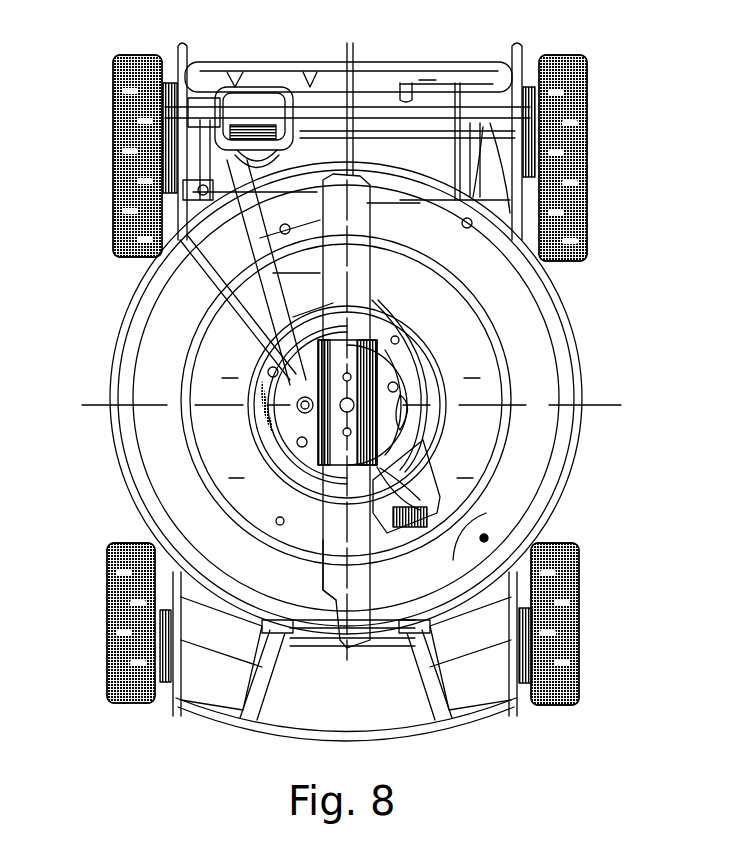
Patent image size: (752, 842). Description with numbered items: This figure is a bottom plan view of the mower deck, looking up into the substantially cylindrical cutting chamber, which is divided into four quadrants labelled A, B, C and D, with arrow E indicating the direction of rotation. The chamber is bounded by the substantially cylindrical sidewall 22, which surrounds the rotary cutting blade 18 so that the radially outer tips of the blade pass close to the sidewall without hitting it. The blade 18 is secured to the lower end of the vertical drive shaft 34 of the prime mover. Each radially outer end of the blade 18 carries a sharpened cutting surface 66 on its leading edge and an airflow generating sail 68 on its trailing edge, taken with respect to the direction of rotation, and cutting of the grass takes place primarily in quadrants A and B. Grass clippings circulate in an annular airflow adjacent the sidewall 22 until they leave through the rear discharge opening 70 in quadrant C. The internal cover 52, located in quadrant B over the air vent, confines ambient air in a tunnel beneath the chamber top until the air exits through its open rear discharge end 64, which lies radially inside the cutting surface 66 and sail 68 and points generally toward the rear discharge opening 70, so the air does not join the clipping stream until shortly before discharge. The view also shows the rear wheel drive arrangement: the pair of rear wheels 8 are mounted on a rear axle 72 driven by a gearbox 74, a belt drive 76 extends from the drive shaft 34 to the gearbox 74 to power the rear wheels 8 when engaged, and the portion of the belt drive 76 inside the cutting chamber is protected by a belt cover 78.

The rear wheels 8 is at (112, 90).
The rotary cutting blade 18 is at (325, 325).
The sidewall 22 is at (584, 384).
The drive shaft 34 is at (385, 345).
The internal cover 52 is at (433, 448).
The rear discharge end 64 is at (420, 423).
The cutting surface 66 is at (352, 604).
The airflow generating sail 68 is at (322, 548).
The rear discharge opening 70 is at (418, 197).
The rear axle 72 is at (372, 115).
The gearbox 74 is at (245, 105).
The belt drive 76 is at (302, 118).
The belt cover 78 is at (280, 266).